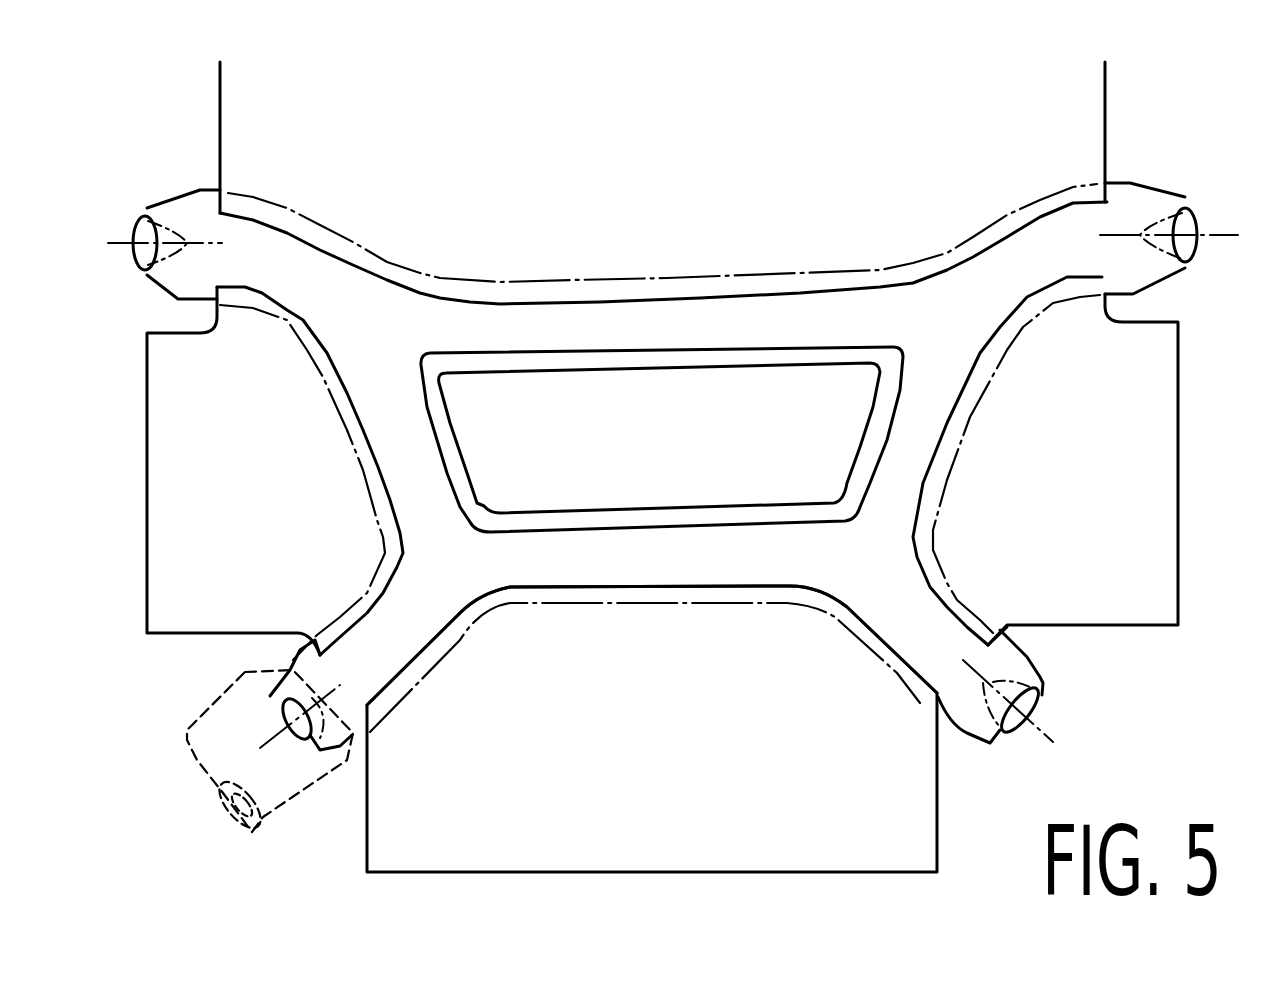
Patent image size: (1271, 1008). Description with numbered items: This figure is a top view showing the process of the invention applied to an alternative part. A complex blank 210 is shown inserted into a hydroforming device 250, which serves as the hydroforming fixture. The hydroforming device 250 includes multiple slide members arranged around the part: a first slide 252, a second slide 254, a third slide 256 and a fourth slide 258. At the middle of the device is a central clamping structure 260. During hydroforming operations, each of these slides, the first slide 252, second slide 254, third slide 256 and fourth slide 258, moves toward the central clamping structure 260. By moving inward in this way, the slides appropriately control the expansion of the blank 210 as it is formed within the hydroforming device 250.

The hydroforming device 250 is at (673, 509).
The fourth slide 258 is at (858, 121).
The first slide 252 is at (290, 577).
The second slide 254 is at (1110, 562).
The third slide 256 is at (808, 753).
The central clamping structure 260 is at (565, 500).
The complex blank 210 is at (1017, 667).